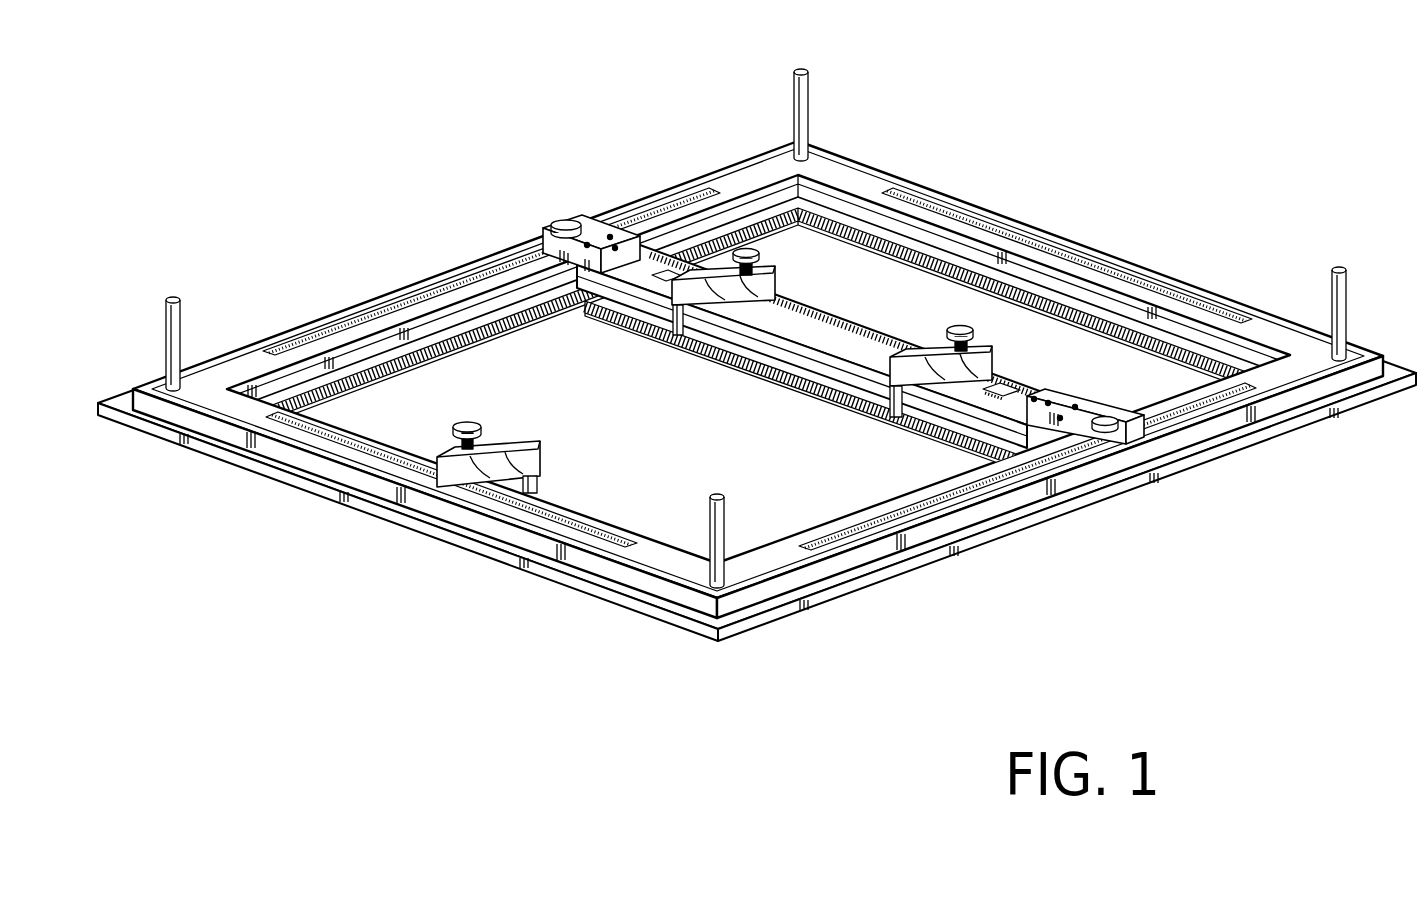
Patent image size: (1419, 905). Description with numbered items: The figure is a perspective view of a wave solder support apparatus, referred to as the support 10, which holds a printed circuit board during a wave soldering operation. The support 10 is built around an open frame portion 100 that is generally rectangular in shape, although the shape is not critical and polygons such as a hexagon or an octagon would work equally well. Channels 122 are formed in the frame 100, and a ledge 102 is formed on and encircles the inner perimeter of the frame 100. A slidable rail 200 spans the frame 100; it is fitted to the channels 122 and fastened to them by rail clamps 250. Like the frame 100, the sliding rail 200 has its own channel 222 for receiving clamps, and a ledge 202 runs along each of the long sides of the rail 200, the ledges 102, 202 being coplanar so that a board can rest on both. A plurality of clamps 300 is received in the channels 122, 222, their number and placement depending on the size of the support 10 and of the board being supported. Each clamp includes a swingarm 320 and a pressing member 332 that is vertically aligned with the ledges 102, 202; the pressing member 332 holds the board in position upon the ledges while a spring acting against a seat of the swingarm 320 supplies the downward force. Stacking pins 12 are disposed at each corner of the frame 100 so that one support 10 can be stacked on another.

The support 10 is at (1188, 70).
The stacking pins 12 is at (174, 297).
The open frame portion 100 is at (890, 175).
The ledge 102 is at (522, 333).
The channels 122 is at (318, 352).
The slidable rail 200 is at (822, 318).
The ledge 202 is at (767, 373).
The channel 222 is at (1003, 393).
The rail clamps 250 is at (1123, 437).
The clamps 300 is at (512, 458).
The swingarm 320 is at (915, 368).
The pressing member 332 is at (862, 410).